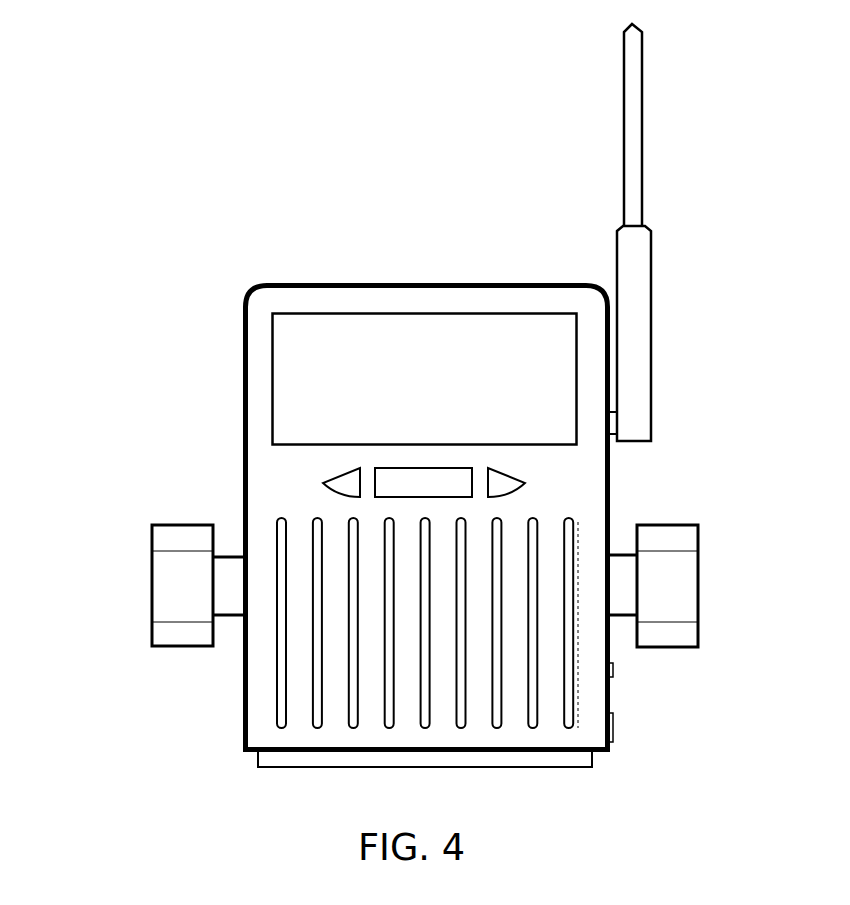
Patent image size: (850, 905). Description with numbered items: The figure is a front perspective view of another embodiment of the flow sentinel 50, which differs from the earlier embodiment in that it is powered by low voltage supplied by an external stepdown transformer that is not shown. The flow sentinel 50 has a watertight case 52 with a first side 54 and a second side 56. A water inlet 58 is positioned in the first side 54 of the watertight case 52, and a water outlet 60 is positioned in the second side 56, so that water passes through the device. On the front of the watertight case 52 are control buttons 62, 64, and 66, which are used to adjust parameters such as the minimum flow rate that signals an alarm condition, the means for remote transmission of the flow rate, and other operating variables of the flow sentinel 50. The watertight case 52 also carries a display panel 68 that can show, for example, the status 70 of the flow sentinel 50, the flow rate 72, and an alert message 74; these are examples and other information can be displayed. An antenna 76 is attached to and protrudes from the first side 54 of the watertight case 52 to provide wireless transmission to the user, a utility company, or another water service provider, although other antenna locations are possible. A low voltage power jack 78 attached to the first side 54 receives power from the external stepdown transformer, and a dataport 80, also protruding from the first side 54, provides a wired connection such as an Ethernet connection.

The flow sentinel 50 is at (434, 228).
The watertight case 52 is at (385, 740).
The first side 54 is at (611, 490).
The second side 56 is at (248, 423).
The water inlet 58 is at (668, 577).
The water outlet 60 is at (193, 580).
The control button 62 is at (243, 462).
The control button 64 is at (330, 752).
The control button 66 is at (611, 513).
The display panel 68 is at (611, 470).
The status 70 is at (311, 330).
The flow rate 72 is at (512, 330).
The alert message 74 is at (302, 398).
The antenna 76 is at (640, 257).
The low voltage power jack 78 is at (618, 670).
The dataport 80 is at (615, 728).